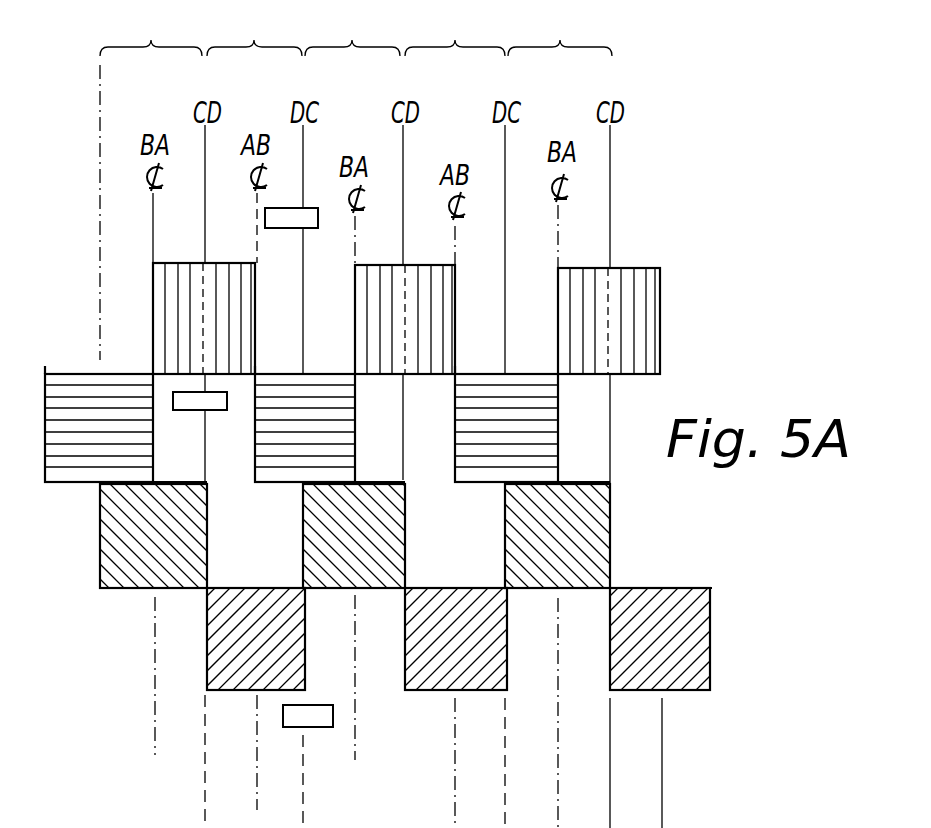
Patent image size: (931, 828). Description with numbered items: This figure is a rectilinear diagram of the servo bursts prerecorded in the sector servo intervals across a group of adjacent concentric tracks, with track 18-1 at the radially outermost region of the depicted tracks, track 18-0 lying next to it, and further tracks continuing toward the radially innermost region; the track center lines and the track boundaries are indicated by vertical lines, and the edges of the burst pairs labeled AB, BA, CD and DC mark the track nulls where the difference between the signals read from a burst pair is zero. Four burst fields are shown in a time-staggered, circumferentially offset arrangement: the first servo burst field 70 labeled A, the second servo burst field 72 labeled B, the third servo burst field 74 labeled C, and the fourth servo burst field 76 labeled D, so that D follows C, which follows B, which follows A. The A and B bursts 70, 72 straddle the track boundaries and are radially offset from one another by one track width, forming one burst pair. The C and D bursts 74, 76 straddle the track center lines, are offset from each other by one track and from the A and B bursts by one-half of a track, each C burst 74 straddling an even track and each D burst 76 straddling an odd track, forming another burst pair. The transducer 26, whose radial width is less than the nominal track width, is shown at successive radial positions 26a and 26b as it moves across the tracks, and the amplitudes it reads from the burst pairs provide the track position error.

The track 18-1 is at (151, 29).
The track 18-0 is at (254, 29).
The first servo burst field 70 is at (154, 262).
The second servo burst field 72 is at (47, 373).
The third servo burst field 74 is at (163, 485).
The fourth servo burst field 76 is at (215, 590).
The transducer 26 is at (277, 230).
The transducer position 26a is at (219, 411).
The transducer position 26b is at (319, 729).